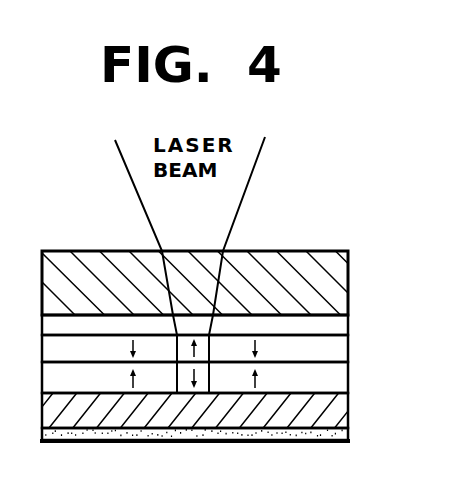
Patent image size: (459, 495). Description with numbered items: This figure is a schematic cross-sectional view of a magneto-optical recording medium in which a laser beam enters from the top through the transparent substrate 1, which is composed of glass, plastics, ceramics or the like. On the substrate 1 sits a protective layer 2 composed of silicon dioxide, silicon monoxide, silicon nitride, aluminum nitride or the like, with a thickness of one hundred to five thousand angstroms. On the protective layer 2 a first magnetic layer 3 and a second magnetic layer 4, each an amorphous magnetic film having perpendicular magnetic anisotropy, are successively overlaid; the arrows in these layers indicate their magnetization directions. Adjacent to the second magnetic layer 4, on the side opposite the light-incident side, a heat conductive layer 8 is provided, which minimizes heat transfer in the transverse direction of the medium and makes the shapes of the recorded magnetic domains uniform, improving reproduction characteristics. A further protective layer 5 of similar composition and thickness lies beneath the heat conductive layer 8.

The substrate 1 is at (342, 273).
The protective layer 2 is at (343, 322).
The first magnetic layer 3 is at (342, 347).
The second magnetic layer 4 is at (343, 373).
The heat conductive layer 8 is at (343, 412).
The protective layer 5 is at (343, 430).